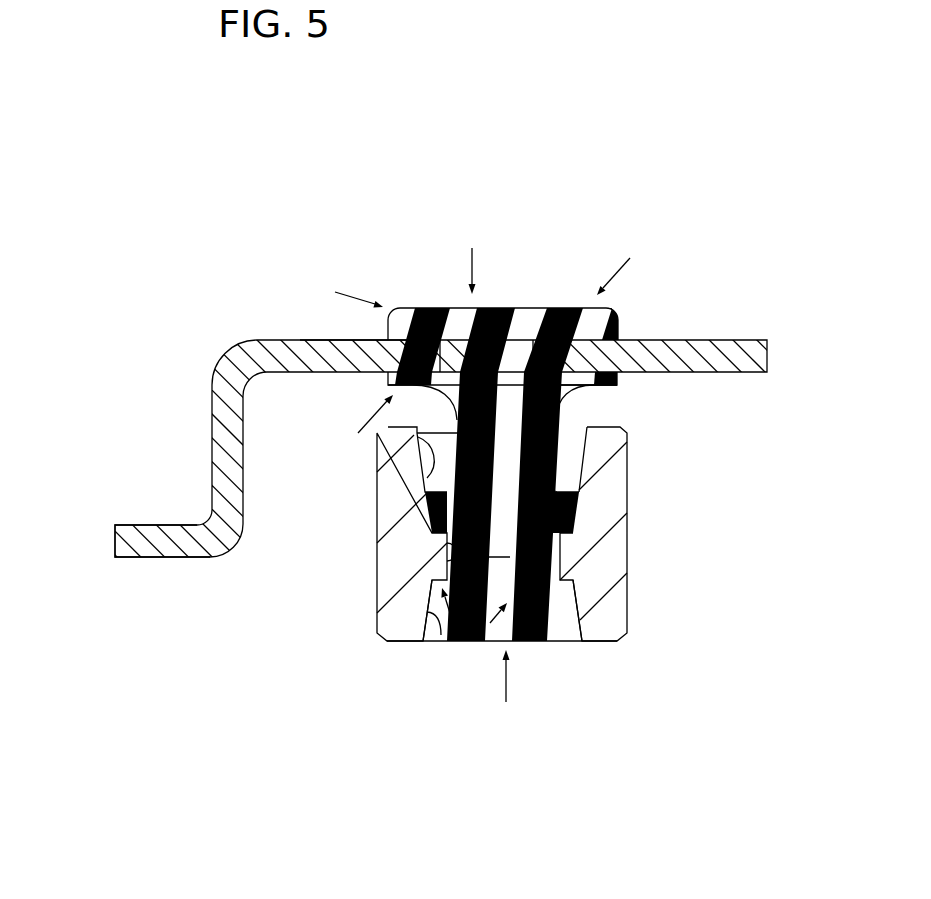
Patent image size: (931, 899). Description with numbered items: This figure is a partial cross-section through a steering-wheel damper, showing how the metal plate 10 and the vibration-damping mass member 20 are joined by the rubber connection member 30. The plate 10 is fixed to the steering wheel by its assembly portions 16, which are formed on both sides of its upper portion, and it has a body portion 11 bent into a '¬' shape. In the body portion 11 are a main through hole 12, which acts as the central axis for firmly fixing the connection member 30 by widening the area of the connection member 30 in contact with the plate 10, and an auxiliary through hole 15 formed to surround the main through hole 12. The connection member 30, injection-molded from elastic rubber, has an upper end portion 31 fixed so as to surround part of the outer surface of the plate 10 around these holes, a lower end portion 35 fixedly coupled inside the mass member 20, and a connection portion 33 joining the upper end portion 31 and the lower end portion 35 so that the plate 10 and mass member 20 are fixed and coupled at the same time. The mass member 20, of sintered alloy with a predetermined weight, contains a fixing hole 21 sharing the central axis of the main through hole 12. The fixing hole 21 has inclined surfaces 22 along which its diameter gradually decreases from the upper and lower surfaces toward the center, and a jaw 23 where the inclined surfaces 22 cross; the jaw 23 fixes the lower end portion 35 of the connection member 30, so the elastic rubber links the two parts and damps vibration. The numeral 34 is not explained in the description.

The plate 10 is at (752, 333).
The body portion 11 is at (340, 339).
The main through hole 12 is at (523, 332).
The auxiliary through hole 15 is at (432, 307).
The assembly portion 16 is at (163, 524).
The mass member 20 is at (619, 652).
The fixing hole 21 is at (540, 452).
The inclined surface 22 is at (417, 438).
The jaw 23 is at (447, 545).
The connection member 30 is at (467, 643).
The upper end portion 31 is at (492, 307).
The connection portion 33 is at (540, 448).
The lower portion of grommet 34 is at (560, 607).
The lower end portion 35 is at (560, 582).